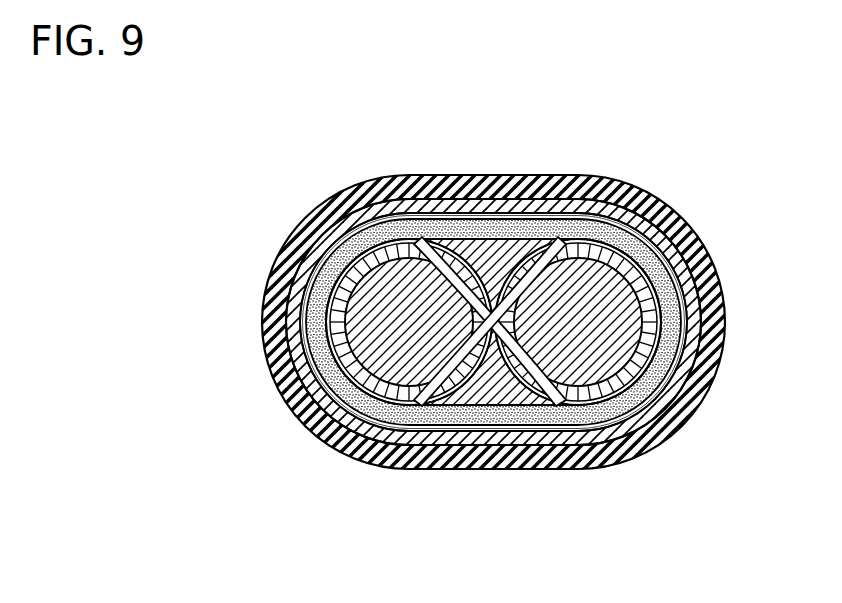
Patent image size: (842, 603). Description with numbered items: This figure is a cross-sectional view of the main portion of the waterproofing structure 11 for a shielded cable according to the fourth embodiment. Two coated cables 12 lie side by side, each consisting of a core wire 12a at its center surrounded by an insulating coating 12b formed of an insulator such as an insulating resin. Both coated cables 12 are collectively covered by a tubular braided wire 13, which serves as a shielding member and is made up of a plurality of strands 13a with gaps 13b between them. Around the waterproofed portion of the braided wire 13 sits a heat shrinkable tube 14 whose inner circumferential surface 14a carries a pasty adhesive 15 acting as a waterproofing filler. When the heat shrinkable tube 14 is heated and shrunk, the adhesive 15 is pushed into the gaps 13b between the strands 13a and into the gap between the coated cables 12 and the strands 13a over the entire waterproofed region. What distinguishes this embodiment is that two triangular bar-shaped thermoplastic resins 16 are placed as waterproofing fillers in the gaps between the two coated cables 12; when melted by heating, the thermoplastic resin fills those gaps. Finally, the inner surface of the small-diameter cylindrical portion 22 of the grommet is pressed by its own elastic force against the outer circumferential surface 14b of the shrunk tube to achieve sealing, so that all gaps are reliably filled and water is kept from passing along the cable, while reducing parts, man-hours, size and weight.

The waterproofing structure 11 is at (498, 314).
The coated cable 12 is at (498, 266).
The core wire 12a is at (412, 262).
The insulating coating 12b is at (386, 246).
The braided wire 13 is at (542, 352).
The strands 13a is at (668, 366).
The gaps 13b is at (642, 388).
The heat shrinkable tube 14 is at (493, 258).
The inner circumferential surface 14a is at (482, 228).
The outer circumferential surface 14b is at (520, 216).
The adhesive 15 is at (603, 208).
The thermoplastic resin 16 is at (463, 250).
The small-diameter cylindrical portion 22 is at (637, 192).